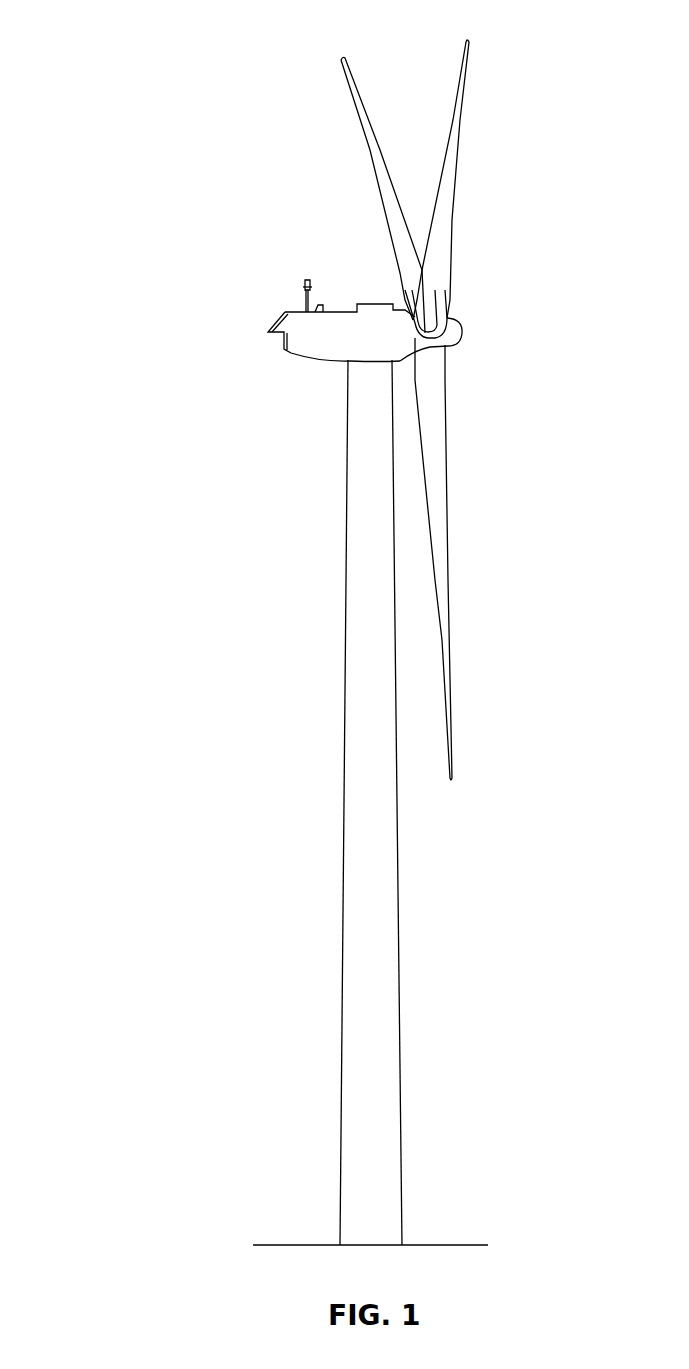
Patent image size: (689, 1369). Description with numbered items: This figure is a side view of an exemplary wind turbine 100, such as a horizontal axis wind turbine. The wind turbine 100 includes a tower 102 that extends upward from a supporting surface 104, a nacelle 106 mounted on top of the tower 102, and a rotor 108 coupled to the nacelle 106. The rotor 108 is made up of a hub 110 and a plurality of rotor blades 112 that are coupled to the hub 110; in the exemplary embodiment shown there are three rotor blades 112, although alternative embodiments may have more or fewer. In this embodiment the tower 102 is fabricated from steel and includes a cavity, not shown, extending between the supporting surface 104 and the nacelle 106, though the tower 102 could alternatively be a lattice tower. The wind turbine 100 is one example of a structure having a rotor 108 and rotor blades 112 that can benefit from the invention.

The wind turbine 100 is at (138, 38).
The tower 102 is at (341, 1088).
The supporting surface 104 is at (324, 1244).
The nacelle 106 is at (318, 359).
The rotor 108 is at (462, 327).
The hub 110 is at (458, 347).
The rotor blades 112 is at (368, 155).